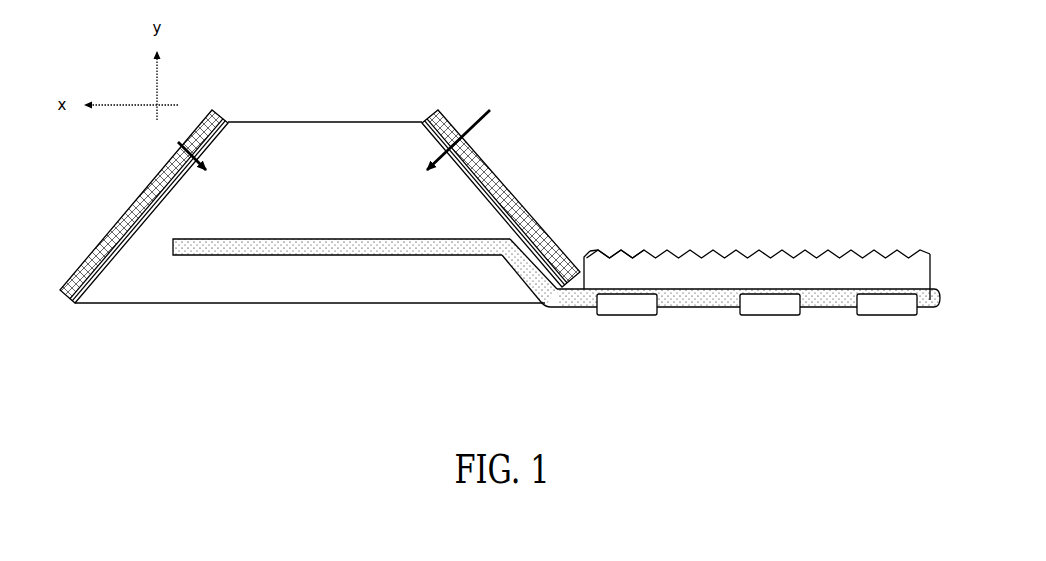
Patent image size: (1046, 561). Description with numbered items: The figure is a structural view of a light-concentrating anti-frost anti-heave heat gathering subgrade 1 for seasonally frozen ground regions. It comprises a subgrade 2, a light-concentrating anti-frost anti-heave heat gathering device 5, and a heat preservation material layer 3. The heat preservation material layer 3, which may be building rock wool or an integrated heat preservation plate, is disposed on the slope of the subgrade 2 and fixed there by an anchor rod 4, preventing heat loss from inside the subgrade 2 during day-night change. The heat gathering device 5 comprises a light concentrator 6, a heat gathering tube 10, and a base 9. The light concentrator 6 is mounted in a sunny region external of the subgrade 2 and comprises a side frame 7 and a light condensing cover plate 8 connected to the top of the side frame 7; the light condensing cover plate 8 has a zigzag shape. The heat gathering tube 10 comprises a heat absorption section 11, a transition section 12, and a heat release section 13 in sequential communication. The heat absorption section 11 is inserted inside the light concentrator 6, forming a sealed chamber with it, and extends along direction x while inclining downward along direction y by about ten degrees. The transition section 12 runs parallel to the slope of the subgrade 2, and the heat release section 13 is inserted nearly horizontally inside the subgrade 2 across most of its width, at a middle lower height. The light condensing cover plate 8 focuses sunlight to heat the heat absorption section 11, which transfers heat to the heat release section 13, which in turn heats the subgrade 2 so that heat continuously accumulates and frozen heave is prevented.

The light-concentrating anti-frost anti-heave heat gathering subgrade 1 is at (491, 49).
The subgrade 2 is at (150, 262).
The heat preservation material layer 3 is at (495, 190).
The anchor rod 4 is at (337, 125).
The light-concentrating anti-frost anti-heave heat gathering device 5 is at (757, 220).
The light concentrator 6 is at (719, 242).
The side frame 7 is at (590, 275).
The light condensing cover plate 8 is at (640, 250).
The base 9 is at (775, 307).
The heat gathering tube 10 is at (559, 316).
The heat absorption section 11 is at (837, 300).
The transition section 12 is at (522, 275).
The heat release section 13 is at (347, 250).